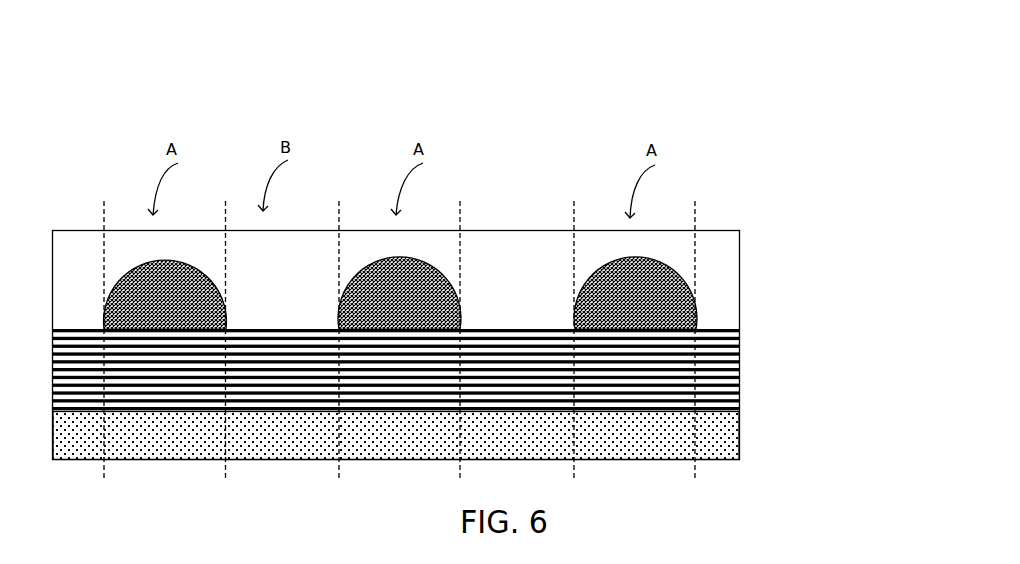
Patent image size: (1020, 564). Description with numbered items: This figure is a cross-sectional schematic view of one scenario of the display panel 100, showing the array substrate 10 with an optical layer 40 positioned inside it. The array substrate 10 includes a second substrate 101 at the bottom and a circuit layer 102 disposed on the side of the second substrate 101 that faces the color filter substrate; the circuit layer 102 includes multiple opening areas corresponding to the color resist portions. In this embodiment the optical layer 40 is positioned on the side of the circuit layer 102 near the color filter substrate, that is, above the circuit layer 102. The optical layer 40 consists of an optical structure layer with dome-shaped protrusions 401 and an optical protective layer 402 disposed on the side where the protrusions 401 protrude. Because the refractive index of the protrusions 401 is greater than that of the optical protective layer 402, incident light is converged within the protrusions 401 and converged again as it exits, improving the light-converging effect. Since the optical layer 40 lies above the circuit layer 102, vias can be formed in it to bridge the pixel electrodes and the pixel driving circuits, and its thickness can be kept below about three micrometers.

The display panel 100 is at (402, 100).
The array substrate 10 is at (480, 377).
The second substrate 101 is at (455, 436).
The circuit layer 102 is at (722, 375).
The optical layer 40 is at (477, 293).
The protrusions 401 is at (683, 300).
The optical protective layer 402 is at (684, 293).